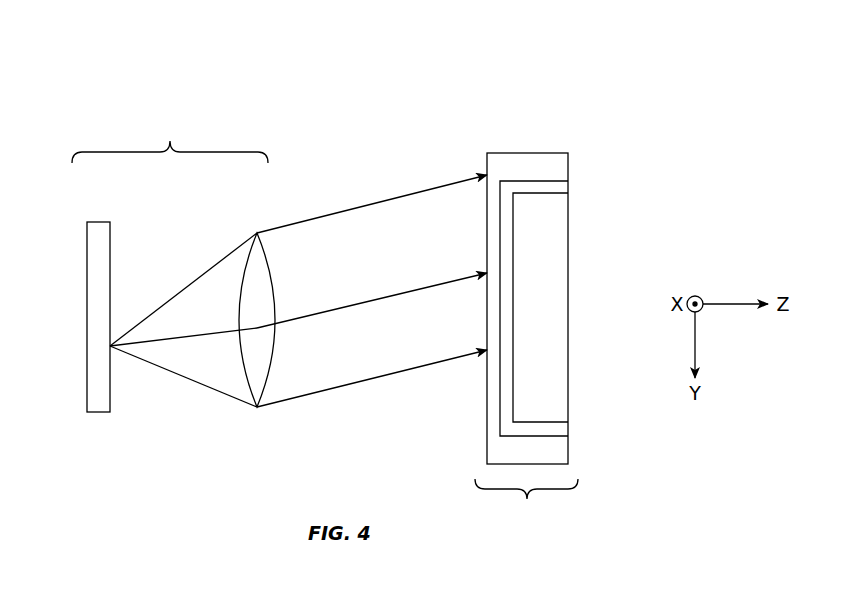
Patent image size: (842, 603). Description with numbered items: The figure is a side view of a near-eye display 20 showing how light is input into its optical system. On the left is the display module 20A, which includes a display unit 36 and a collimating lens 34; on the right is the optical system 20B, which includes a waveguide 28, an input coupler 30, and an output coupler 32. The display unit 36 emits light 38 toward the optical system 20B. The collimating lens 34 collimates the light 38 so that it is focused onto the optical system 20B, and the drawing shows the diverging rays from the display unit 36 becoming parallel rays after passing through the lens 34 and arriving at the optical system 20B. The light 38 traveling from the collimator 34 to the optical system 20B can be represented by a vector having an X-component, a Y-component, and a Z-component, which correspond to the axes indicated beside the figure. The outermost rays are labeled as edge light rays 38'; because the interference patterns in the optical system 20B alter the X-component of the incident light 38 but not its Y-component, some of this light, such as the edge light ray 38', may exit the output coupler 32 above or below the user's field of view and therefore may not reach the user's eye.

The near-eye display 20 is at (553, 82).
The display module 20A is at (170, 140).
The optical system 20B is at (526, 502).
The waveguide 28 is at (558, 166).
The input coupler 30 is at (558, 213).
The output coupler 32 is at (542, 428).
The collimating lens 34 is at (246, 373).
The display unit 36 is at (87, 385).
The light 38 is at (238, 334).
The edge light ray 38' is at (321, 279).